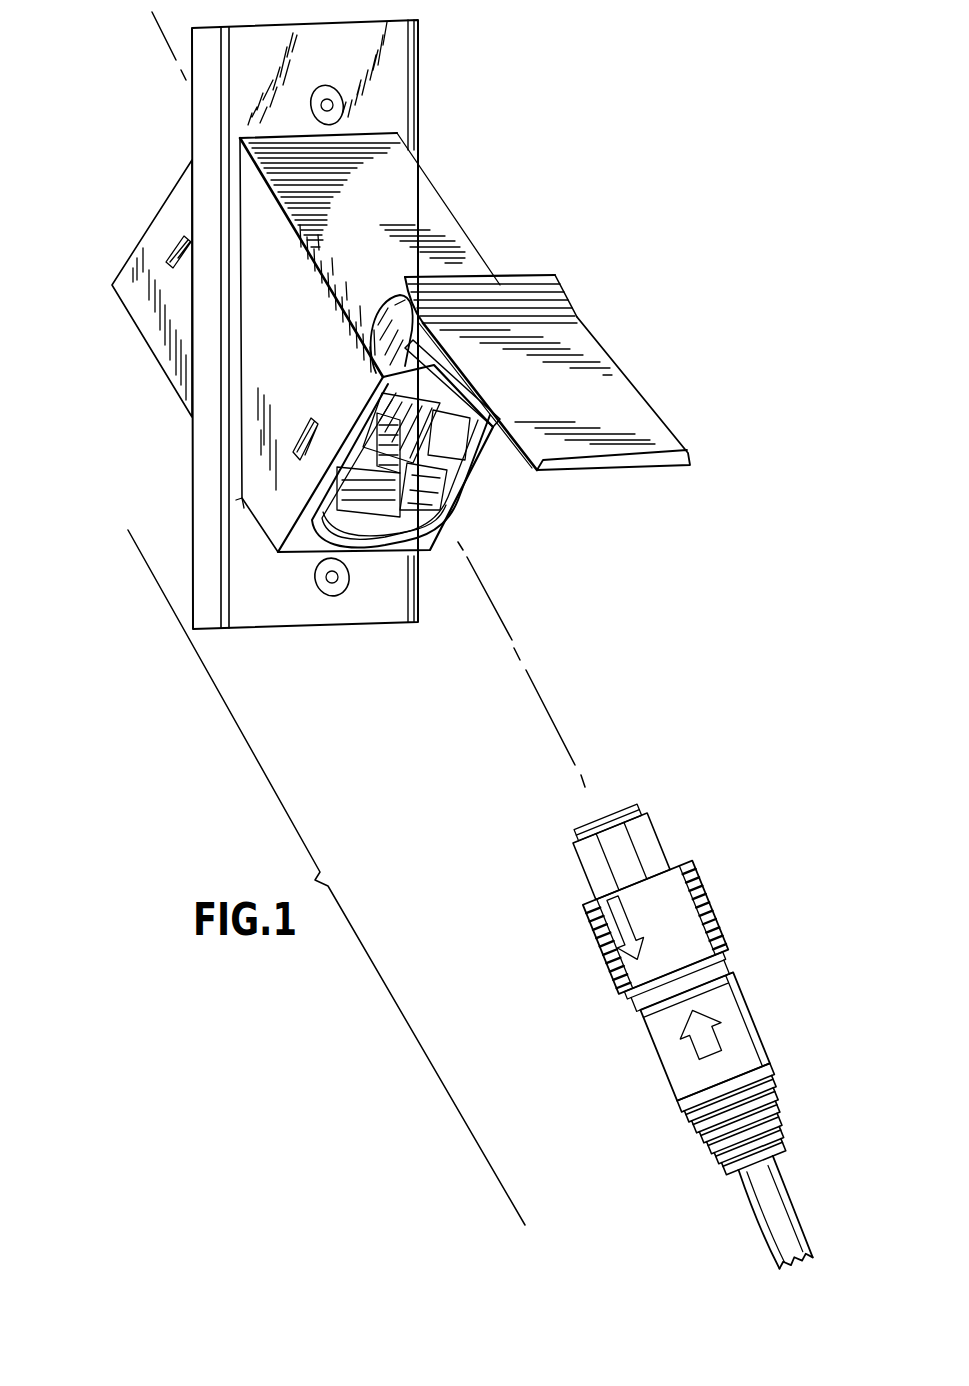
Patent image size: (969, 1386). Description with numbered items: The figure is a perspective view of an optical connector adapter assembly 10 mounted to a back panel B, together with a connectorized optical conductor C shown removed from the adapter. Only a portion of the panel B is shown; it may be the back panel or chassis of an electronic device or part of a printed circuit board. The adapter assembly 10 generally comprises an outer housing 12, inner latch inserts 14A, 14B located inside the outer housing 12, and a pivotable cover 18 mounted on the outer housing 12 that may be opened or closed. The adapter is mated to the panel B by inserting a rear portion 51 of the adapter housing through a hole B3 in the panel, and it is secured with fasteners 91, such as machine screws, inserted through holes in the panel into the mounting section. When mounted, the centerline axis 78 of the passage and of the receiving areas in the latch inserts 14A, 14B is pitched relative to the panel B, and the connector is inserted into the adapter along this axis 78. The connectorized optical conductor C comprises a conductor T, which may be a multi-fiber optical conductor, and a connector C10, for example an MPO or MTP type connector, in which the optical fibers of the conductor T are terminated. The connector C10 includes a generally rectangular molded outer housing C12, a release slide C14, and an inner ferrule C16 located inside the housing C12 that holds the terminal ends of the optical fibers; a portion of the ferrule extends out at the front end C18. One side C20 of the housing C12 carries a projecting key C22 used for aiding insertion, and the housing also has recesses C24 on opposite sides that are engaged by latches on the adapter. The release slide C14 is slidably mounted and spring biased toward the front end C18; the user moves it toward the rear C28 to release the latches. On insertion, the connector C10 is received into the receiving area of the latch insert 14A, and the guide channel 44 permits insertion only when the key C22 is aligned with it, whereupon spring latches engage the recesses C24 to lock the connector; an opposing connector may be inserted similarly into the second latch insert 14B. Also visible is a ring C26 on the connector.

The optical connector adapter assembly 10 is at (507, 238).
The outer housing 12 is at (172, 360).
The latch insert 14A is at (457, 473).
The latch insert 14B is at (143, 302).
The cover 18 is at (660, 427).
The guide channel 44 is at (470, 423).
The rear portion 51 is at (428, 207).
The centerline axis 78 is at (490, 597).
The fasteners 91 is at (340, 97).
The back panel B is at (404, 122).
The hole B3 is at (243, 511).
The connector C10 is at (673, 1026).
The outer housing C12 is at (730, 1013).
The release slide C14 is at (713, 913).
The inner ferrule C16 is at (636, 806).
The front end C18 is at (580, 836).
The side C20 is at (588, 867).
The projecting key C22 is at (625, 862).
The recesses C24 is at (670, 884).
The coupling ring C26 is at (723, 958).
The rear C28 is at (678, 1102).
The connectorized optical conductor C is at (797, 1220).
The conductor T is at (785, 1190).